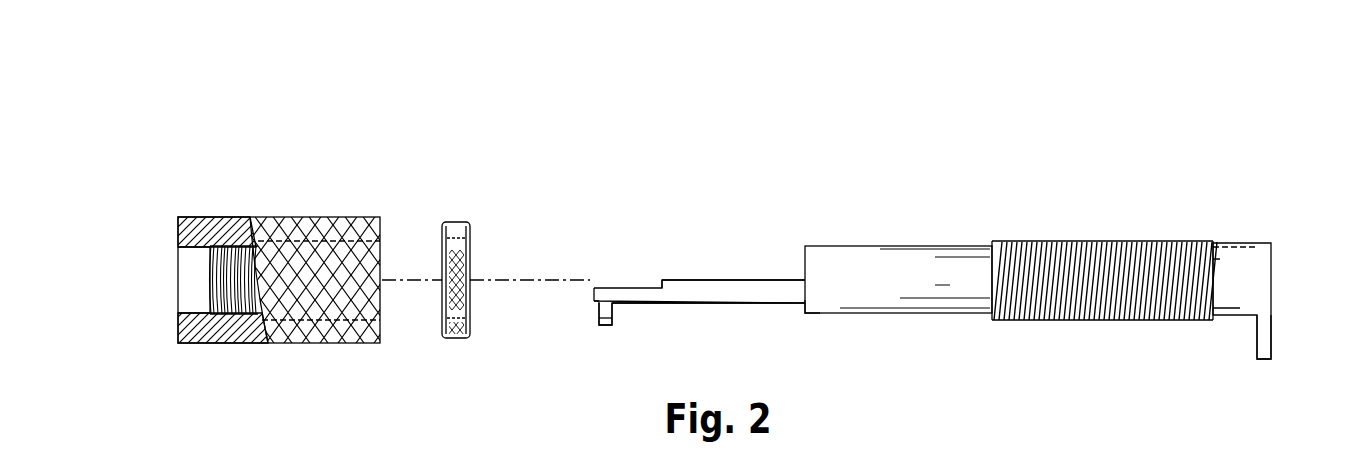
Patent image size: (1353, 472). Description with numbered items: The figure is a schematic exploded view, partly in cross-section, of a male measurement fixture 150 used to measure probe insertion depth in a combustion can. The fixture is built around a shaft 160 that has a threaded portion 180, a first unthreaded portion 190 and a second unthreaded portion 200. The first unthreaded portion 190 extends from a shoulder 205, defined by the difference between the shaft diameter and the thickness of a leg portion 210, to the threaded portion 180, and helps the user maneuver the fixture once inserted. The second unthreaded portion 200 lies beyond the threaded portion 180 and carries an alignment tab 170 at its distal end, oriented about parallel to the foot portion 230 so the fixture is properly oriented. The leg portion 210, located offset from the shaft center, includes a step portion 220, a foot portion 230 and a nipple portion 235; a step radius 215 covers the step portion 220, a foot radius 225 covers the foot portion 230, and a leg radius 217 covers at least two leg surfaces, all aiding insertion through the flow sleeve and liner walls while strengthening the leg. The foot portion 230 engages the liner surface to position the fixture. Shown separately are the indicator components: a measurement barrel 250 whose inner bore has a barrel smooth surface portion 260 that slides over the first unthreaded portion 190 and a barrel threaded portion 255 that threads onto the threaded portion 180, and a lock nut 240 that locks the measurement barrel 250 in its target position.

The male measurement fixture 150 is at (244, 237).
The shaft 160 is at (922, 245).
The alignment tab 170 is at (1272, 342).
The threaded portion 180 is at (1092, 233).
The first unthreaded portion 190 is at (898, 271).
The second unthreaded portion 200 is at (1266, 277).
The shoulder 205 is at (805, 316).
The leg portion 210 is at (665, 286).
The step radius 215 is at (648, 284).
The leg radius 217 is at (752, 272).
The step portion 220 is at (612, 287).
The foot radius 225 is at (607, 328).
The foot portion 230 is at (598, 318).
The nipple portion 235 is at (594, 290).
The lock nut 240 is at (456, 222).
The measurement barrel 250 is at (265, 215).
The barrel threaded portion 255 is at (243, 313).
The barrel smooth surface portion 260 is at (186, 303).